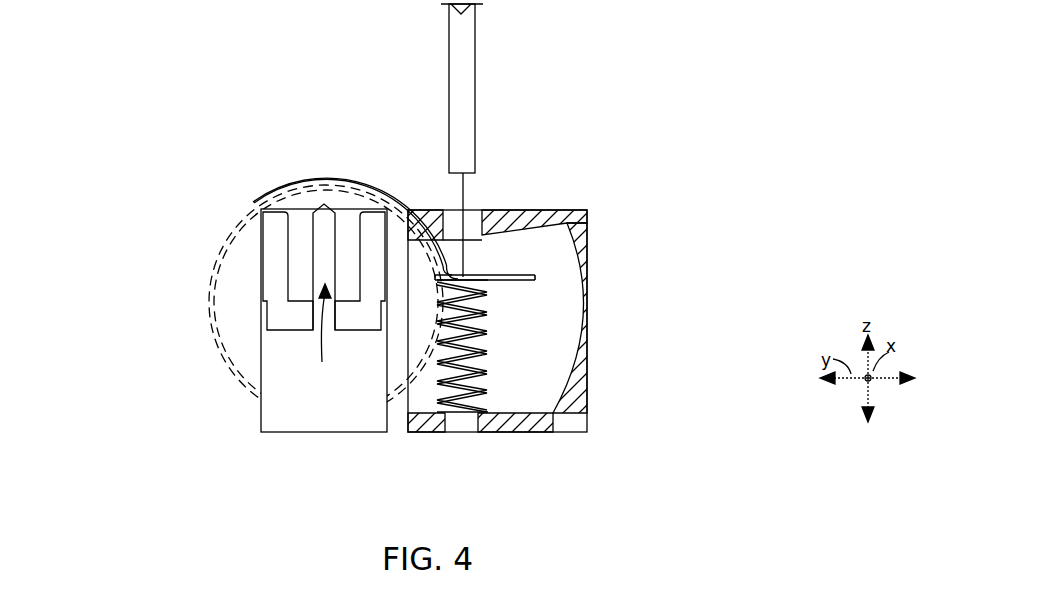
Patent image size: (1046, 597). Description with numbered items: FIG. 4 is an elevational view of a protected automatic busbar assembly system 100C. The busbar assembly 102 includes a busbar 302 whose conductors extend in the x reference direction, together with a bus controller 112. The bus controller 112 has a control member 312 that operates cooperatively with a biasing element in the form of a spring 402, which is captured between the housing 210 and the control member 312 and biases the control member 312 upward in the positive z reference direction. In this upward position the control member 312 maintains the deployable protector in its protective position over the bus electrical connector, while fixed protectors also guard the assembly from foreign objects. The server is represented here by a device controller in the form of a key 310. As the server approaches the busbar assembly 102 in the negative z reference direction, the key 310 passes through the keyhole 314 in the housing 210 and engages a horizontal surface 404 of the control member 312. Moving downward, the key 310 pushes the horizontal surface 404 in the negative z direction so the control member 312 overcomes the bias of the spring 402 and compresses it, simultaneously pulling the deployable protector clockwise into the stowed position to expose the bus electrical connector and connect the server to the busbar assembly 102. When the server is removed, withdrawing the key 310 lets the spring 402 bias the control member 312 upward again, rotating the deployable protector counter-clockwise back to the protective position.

The system 100C is at (217, 32).
The busbar assembly 102 is at (356, 440).
The busbar 302 is at (261, 413).
The housing 210 is at (546, 432).
The keyhole 314 is at (473, 210).
The key 310 is at (477, 83).
The bus controller 112 is at (546, 250).
The control member 312 is at (656, 302).
The horizontal surface 404 is at (535, 277).
The spring 402 is at (484, 368).